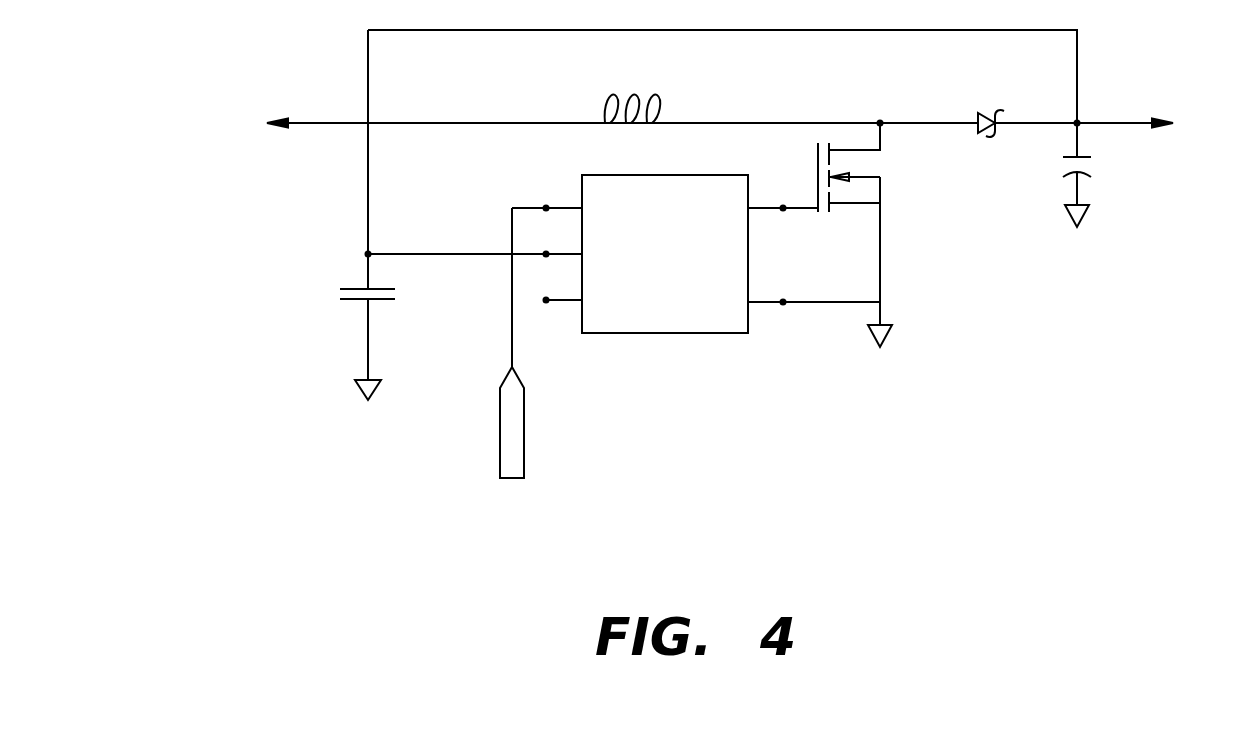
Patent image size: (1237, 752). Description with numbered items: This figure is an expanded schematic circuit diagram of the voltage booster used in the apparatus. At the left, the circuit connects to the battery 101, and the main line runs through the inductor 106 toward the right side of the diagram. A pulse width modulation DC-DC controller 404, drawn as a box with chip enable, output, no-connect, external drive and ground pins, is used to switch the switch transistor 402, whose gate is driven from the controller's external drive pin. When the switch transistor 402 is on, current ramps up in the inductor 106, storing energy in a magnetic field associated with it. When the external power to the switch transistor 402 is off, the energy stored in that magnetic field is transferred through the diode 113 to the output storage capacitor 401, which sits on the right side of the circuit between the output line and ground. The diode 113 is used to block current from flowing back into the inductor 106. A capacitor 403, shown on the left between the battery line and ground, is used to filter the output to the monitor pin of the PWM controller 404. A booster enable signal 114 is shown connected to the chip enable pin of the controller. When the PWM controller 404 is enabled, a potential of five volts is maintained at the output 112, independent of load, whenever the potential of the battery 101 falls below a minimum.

The battery 101 is at (286, 91).
The inductor 106 is at (633, 92).
The diode 113 is at (990, 106).
The output 112 is at (1147, 92).
The pulse width modulation DC-DC controller 404 is at (665, 238).
The switch transistor 402 is at (841, 235).
The output storage capacitor 401 is at (1105, 175).
The capacitor 403 is at (345, 327).
The booster enable signal 114 is at (590, 343).